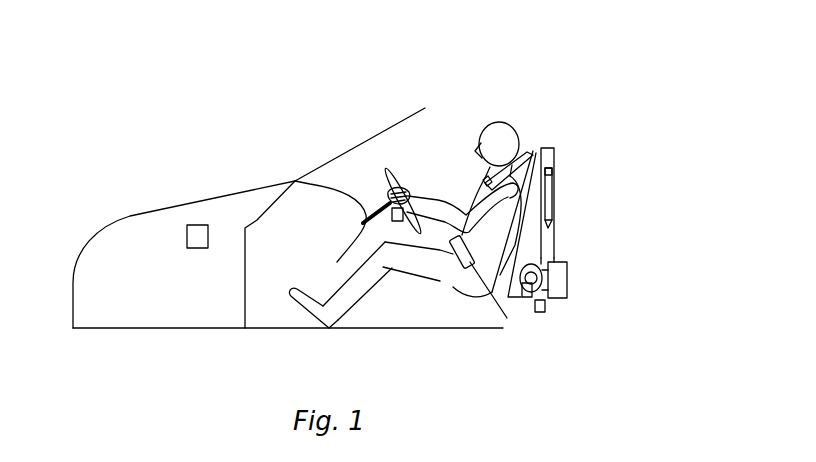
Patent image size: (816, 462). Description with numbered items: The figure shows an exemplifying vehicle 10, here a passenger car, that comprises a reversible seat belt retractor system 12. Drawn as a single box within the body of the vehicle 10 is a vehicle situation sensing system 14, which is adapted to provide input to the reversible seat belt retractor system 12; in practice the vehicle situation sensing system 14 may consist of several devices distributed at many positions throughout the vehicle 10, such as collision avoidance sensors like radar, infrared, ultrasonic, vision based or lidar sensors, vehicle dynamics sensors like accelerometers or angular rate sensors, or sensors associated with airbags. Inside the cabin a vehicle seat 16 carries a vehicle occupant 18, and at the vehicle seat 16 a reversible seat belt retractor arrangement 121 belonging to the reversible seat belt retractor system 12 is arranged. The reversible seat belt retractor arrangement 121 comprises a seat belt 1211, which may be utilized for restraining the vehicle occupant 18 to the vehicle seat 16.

The vehicle 10 is at (218, 65).
The reversible seat belt retractor system 12 is at (573, 138).
The vehicle situation sensing system 14 is at (181, 233).
The vehicle seat 16 is at (405, 284).
The vehicle occupant 18 is at (448, 280).
The reversible seat belt retractor arrangement 121 is at (535, 318).
The seat belt 1211 is at (463, 268).